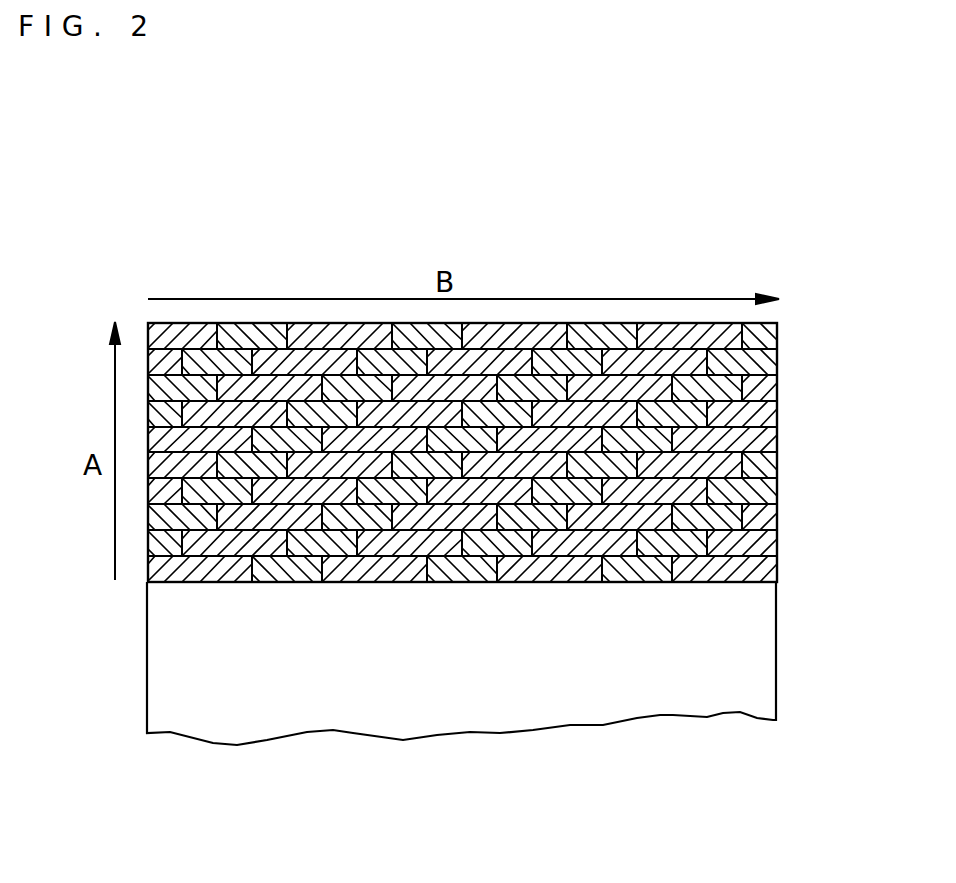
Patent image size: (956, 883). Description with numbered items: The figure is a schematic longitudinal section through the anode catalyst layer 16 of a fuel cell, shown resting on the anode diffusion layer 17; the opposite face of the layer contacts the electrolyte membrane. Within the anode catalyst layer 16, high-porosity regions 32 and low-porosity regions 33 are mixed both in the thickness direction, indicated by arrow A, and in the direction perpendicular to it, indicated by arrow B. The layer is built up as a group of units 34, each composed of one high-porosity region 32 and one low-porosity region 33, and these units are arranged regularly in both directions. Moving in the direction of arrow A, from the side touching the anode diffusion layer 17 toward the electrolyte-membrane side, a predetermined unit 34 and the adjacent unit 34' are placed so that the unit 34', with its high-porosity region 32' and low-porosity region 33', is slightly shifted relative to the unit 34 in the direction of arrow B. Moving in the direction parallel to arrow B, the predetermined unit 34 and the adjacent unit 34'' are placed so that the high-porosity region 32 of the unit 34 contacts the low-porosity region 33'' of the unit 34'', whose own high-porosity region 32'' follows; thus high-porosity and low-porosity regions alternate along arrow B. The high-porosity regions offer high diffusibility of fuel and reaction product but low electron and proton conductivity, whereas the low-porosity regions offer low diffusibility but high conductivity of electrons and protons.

The anode catalyst layer 16 is at (818, 325).
The anode diffusion layer 17 is at (755, 632).
The high-porosity region 32 is at (449, 682).
The low-porosity region 33 is at (374, 682).
The unit 34 is at (409, 710).
The high-porosity region of adjacent unit 34' 32' is at (526, 391).
The low-porosity region of adjacent unit 34' 33' is at (444, 391).
The adjacent unit 34' is at (481, 365).
The high-porosity region of adjacent unit 34" 32'' is at (636, 682).
The low-porosity region of adjacent unit 34" 33'' is at (549, 682).
The adjacent unit 34'' is at (584, 710).